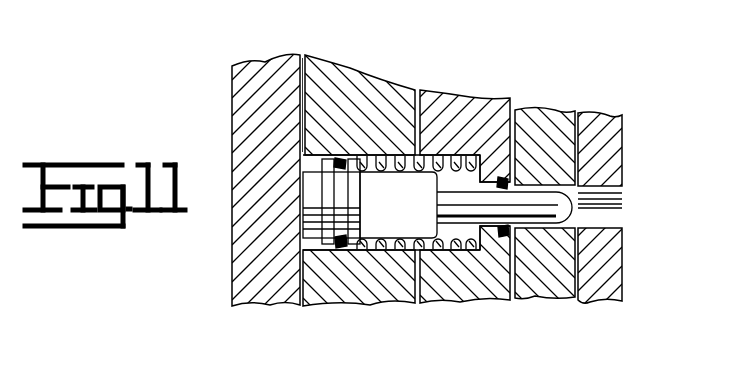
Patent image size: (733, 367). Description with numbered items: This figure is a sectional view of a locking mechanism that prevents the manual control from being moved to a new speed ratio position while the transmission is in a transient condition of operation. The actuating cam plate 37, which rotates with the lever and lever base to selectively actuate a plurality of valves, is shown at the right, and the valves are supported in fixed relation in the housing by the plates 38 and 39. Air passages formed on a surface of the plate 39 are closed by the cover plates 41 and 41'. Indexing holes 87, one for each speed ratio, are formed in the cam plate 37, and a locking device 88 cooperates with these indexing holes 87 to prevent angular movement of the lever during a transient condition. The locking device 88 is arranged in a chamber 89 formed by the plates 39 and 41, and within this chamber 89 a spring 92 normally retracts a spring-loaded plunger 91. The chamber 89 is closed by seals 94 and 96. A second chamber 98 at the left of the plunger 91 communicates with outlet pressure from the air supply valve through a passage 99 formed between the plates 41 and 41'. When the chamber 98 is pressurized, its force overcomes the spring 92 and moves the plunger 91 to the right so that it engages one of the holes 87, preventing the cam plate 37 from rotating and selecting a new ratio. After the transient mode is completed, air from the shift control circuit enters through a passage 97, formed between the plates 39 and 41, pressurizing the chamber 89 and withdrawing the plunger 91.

The actuating cam plate 37 is at (610, 143).
The plate 38 is at (560, 118).
The plate 39 is at (467, 288).
The cover plate 41 is at (359, 175).
The cover plate 41' is at (266, 206).
The indexing holes 87 is at (608, 218).
The locking device 88 is at (460, 80).
The chamber 89 is at (465, 160).
The spring-loaded plunger 91 is at (405, 201).
The spring 92 is at (400, 250).
The seal 94 is at (343, 249).
The seal 96 is at (500, 239).
The passage 97 is at (420, 92).
The chamber 98 is at (318, 240).
The passage 99 is at (300, 57).